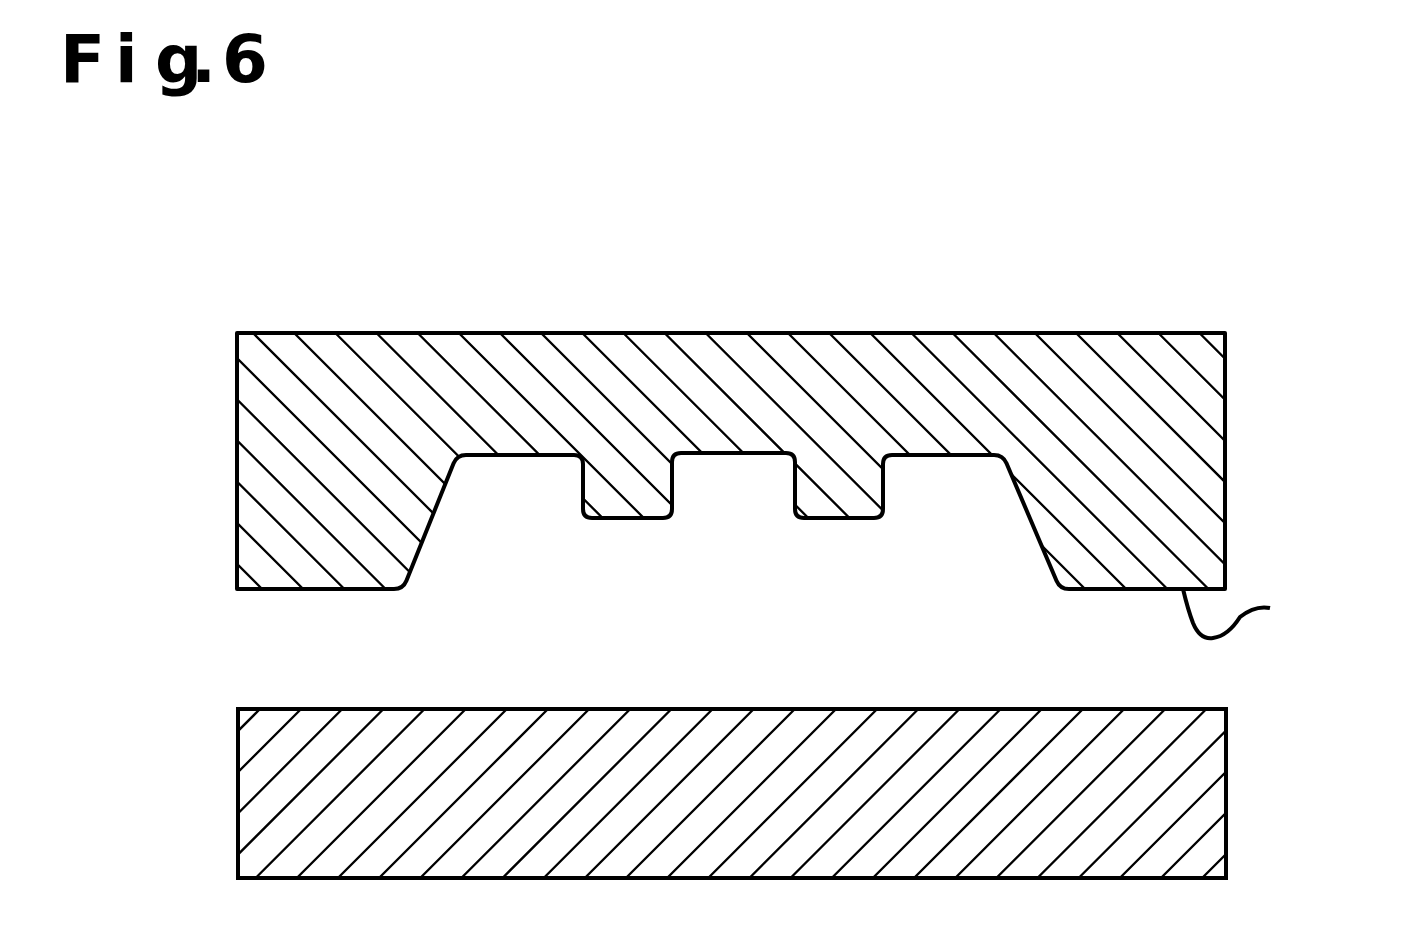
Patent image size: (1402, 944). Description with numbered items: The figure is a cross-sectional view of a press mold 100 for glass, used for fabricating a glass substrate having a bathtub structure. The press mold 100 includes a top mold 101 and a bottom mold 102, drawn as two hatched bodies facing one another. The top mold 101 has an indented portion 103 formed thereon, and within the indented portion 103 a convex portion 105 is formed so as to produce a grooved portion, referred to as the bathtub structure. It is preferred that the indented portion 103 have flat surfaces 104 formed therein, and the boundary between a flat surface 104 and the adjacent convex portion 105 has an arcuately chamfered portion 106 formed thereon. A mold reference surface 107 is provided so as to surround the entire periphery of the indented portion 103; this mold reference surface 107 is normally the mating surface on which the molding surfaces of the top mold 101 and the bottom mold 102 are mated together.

The press mold 100 is at (170, 261).
The top mold 101 is at (1217, 453).
The bottom mold 102 is at (1217, 790).
The indented portion 103 is at (1062, 608).
The flat surface 104 is at (515, 473).
The convex portion 105 is at (837, 532).
The arcuately chamfered portion 106 is at (895, 470).
The mold reference surface 107 is at (1267, 611).